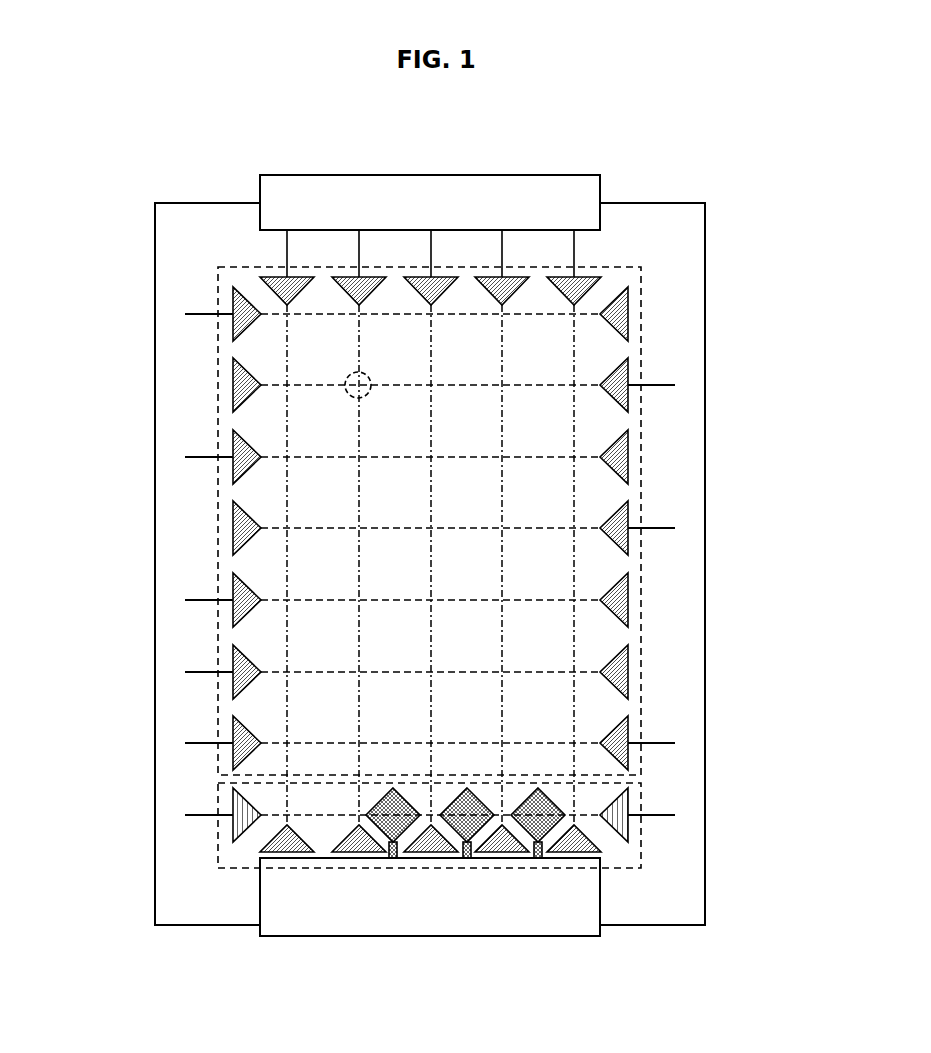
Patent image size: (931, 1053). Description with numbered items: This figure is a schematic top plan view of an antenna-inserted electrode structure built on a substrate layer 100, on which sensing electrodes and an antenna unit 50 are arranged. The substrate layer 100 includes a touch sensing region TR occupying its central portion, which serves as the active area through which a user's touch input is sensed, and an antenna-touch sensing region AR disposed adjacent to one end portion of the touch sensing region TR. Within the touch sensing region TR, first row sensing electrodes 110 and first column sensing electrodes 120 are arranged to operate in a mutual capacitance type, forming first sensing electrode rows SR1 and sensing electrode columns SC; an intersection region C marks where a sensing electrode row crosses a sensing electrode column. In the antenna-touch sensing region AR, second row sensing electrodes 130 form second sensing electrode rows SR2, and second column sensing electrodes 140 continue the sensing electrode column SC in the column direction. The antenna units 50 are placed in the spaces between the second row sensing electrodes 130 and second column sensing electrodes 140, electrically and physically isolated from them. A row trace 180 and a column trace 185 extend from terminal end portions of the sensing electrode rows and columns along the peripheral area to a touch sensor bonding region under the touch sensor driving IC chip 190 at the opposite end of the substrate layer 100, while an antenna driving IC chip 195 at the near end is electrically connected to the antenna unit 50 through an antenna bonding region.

The substrate layer 100 is at (692, 903).
The touch sensor driving IC chip 190 is at (430, 186).
The antenna driving IC chip 195 is at (430, 922).
The column trace 185 is at (574, 246).
The first column sensing electrodes 120 is at (586, 279).
The touch sensing region TR is at (652, 336).
The sensing electrode column SC is at (574, 578).
The first sensing electrode rows SR1 is at (582, 457).
The first row sensing electrodes 110 is at (623, 457).
The row trace 180 is at (652, 385).
The intersection region C is at (343, 377).
The antenna-touch sensing region AR is at (208, 836).
The second sensing electrode rows SR2 is at (597, 822).
The second row sensing electrodes 130 is at (625, 797).
The second column sensing electrodes 140 is at (287, 843).
The antenna unit 50 is at (552, 832).